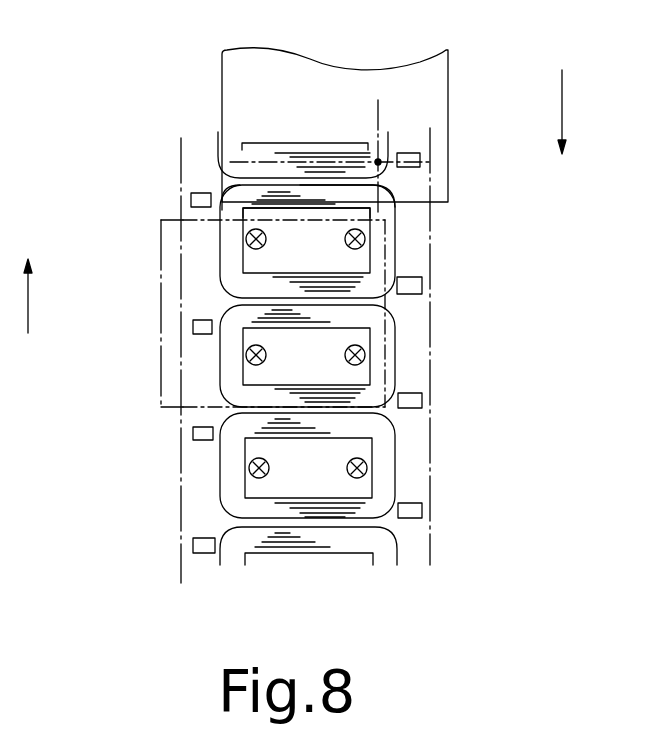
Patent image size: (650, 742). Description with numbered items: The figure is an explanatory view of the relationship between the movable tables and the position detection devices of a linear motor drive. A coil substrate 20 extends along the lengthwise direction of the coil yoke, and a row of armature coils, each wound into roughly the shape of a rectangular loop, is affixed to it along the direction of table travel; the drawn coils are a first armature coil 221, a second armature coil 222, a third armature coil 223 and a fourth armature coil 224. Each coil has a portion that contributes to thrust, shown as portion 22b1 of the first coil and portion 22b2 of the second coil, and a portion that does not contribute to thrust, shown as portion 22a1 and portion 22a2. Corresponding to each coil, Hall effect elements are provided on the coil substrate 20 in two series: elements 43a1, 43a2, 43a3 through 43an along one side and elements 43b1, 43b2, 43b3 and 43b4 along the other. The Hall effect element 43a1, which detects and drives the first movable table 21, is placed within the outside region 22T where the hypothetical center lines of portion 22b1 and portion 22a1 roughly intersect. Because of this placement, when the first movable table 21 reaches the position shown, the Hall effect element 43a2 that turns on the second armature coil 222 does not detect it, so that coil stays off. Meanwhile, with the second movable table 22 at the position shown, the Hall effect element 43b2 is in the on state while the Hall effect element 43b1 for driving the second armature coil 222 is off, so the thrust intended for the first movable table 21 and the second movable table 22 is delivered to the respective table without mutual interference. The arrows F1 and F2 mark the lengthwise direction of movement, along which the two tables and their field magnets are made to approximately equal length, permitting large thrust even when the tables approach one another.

The first movable table 21 is at (417, 80).
The second movable table 22 is at (167, 348).
The coil substrate 20 is at (442, 275).
The first armature coil 221 is at (388, 148).
The second armature coil 222 is at (393, 240).
The third armature coil 223 is at (380, 354).
The fourth armature coil 224 is at (385, 470).
The non-thrust-contributing portion of armature coil 22a1 is at (383, 110).
The non-thrust-contributing portion of armature coil 22a2 is at (230, 240).
The thrust-contributing portion of armature coil 22b1 is at (318, 167).
The thrust-contributing portion of armature coil 22b2 is at (240, 197).
The outside region 22T is at (400, 188).
The Hall effect element 43a1 is at (433, 162).
The Hall effect element 43a2 is at (413, 290).
The Hall effect element 43a3 is at (412, 402).
The Hall effect element 43an is at (413, 518).
The Hall effect element 43b1 is at (200, 193).
The Hall effect element 43b2 is at (202, 320).
The Hall effect element 43b3 is at (200, 427).
The Hall effect element 43b4 is at (202, 538).
The arrow indicating lengthwise direction F1 is at (578, 112).
The arrow indicating lengthwise direction F2 is at (34, 316).